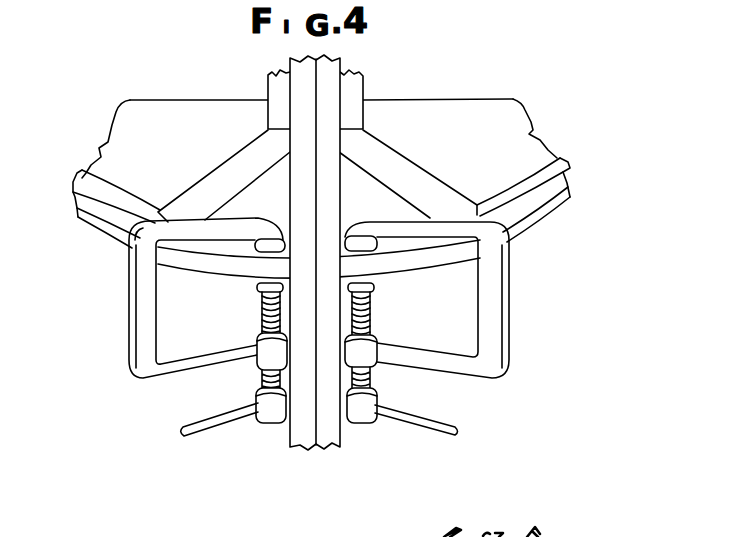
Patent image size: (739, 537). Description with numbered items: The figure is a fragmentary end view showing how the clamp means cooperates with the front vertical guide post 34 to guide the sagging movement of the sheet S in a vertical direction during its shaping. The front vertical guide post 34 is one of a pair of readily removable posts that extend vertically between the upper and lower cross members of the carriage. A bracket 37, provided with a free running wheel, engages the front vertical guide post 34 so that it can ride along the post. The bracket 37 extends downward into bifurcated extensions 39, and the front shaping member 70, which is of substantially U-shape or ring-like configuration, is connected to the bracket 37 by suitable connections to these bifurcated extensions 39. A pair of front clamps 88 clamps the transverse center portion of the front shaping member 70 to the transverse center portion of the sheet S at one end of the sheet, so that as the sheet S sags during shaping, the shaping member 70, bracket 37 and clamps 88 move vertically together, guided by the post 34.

The front vertical guide post 34 is at (300, 93).
The bracket 37 is at (357, 82).
The bifurcated extensions 39 is at (218, 171).
The front shaping member 70 is at (510, 179).
The sheet S is at (88, 241).
The front clamps 88 is at (178, 391).